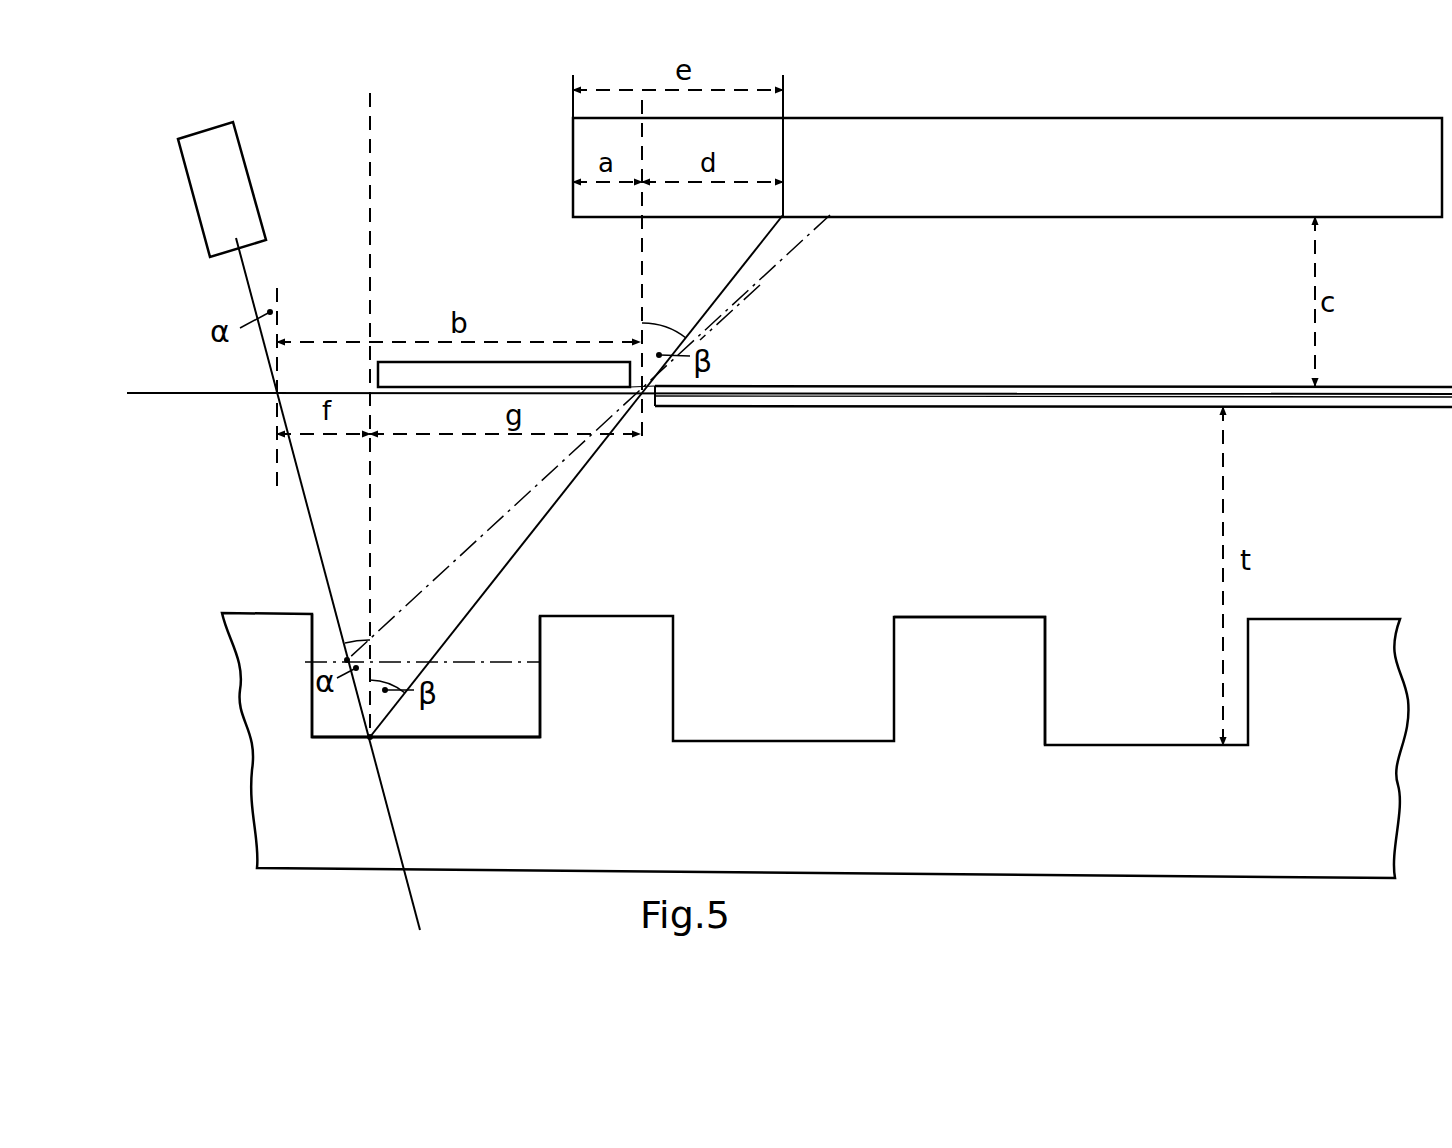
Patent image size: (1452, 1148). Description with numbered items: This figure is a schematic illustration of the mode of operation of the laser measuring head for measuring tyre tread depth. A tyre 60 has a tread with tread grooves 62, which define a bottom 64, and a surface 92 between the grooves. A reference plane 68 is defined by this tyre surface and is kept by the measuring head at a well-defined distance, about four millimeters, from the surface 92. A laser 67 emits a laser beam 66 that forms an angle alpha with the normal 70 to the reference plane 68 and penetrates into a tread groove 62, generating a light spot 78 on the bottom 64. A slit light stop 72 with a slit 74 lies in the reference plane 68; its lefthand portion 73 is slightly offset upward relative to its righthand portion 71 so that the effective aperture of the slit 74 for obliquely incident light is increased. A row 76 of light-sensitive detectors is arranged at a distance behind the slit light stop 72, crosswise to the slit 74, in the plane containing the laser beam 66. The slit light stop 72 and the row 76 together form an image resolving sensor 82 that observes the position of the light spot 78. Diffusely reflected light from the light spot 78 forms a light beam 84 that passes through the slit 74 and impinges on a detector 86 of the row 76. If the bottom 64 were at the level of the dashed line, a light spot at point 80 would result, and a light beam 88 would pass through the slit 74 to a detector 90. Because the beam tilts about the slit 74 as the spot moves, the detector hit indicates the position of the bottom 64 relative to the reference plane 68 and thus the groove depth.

The tyre 60 is at (775, 755).
The tread grooves 62 is at (466, 676).
The bottom 64 is at (445, 737).
The laser beam 66 is at (312, 540).
The laser 67 is at (232, 152).
The reference plane 68 is at (181, 396).
The normal 70 is at (375, 546).
The righthand portion 71 is at (830, 408).
The slit light stop 72 is at (1078, 386).
The lefthand portion 73 is at (545, 362).
The slit 74 is at (651, 402).
The row of light sensitive detectors 76 is at (868, 133).
The light spot 78 is at (368, 740).
The point 80 is at (345, 660).
The image resolving sensor 82 is at (507, 268).
The light beam 84 is at (578, 483).
The detector 86 is at (785, 213).
The light beam 88 is at (764, 288).
The detector 90 is at (832, 218).
The surface 92 is at (955, 616).